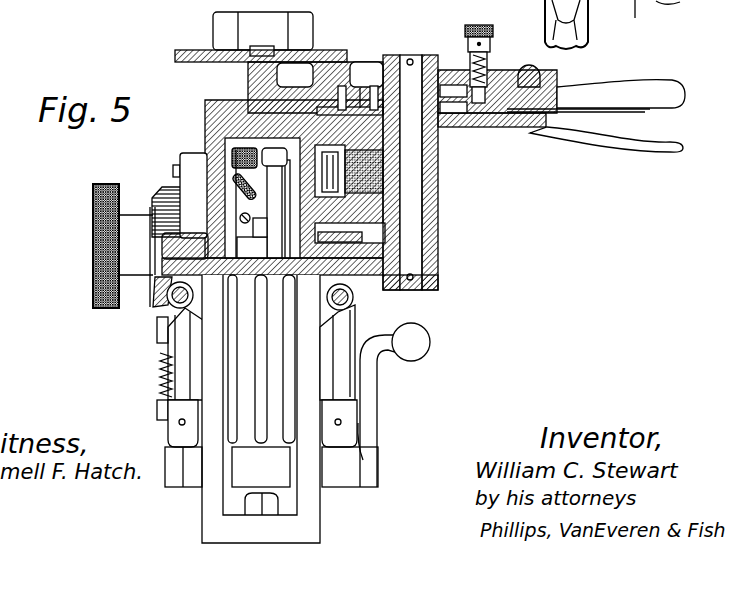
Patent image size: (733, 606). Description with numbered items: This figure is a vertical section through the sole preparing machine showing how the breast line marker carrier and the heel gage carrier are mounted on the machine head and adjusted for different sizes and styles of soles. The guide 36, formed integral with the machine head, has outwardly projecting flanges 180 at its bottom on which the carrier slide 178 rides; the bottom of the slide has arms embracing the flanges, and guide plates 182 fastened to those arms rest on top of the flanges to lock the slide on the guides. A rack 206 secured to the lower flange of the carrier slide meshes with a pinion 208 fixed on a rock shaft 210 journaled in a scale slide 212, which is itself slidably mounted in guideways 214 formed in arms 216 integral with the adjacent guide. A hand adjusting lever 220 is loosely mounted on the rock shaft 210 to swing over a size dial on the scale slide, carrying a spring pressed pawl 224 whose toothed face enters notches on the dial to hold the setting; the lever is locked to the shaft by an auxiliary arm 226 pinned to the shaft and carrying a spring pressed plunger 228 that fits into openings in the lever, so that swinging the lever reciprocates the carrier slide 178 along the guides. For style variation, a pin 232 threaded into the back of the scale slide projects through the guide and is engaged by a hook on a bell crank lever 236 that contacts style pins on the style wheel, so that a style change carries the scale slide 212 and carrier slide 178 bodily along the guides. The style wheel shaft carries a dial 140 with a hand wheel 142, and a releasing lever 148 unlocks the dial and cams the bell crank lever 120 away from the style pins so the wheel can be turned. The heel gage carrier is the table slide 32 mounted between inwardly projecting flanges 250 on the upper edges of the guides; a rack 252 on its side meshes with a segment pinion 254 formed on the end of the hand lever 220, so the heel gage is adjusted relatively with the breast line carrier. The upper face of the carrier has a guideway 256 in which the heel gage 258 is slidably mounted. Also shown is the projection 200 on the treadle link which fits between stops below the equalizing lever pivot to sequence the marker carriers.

The heel gage carrier 32 is at (178, 51).
The guide 36 is at (208, 137).
The bell crank lever 120 is at (247, 360).
The dial 140 is at (155, 298).
The hand wheel 142 is at (92, 243).
The releasing lever 148 is at (430, 340).
The carrier slide 178 is at (261, 409).
The flanges 180 is at (197, 247).
The guide plates 182 is at (162, 228).
The projection 200 is at (570, 25).
The rack 206 is at (367, 276).
The pinion 208 is at (437, 258).
The rock shaft 210 is at (408, 210).
The scale slide 212 is at (440, 150).
The guideways 214 is at (392, 155).
The arms 216 is at (343, 90).
The hand adjusting lever 220 is at (612, 140).
The spring pressed pawl 224 is at (532, 128).
The auxiliary arm 226 is at (432, 62).
The spring pressed plunger 228 is at (500, 85).
The pin 232 is at (411, 172).
The bell crank lever 236 is at (300, 373).
The flanges 250 is at (290, 130).
The rack 252 is at (346, 65).
The segment pinion 254 is at (375, 92).
The guideway 256 is at (262, 50).
The heel gage 258 is at (222, 23).